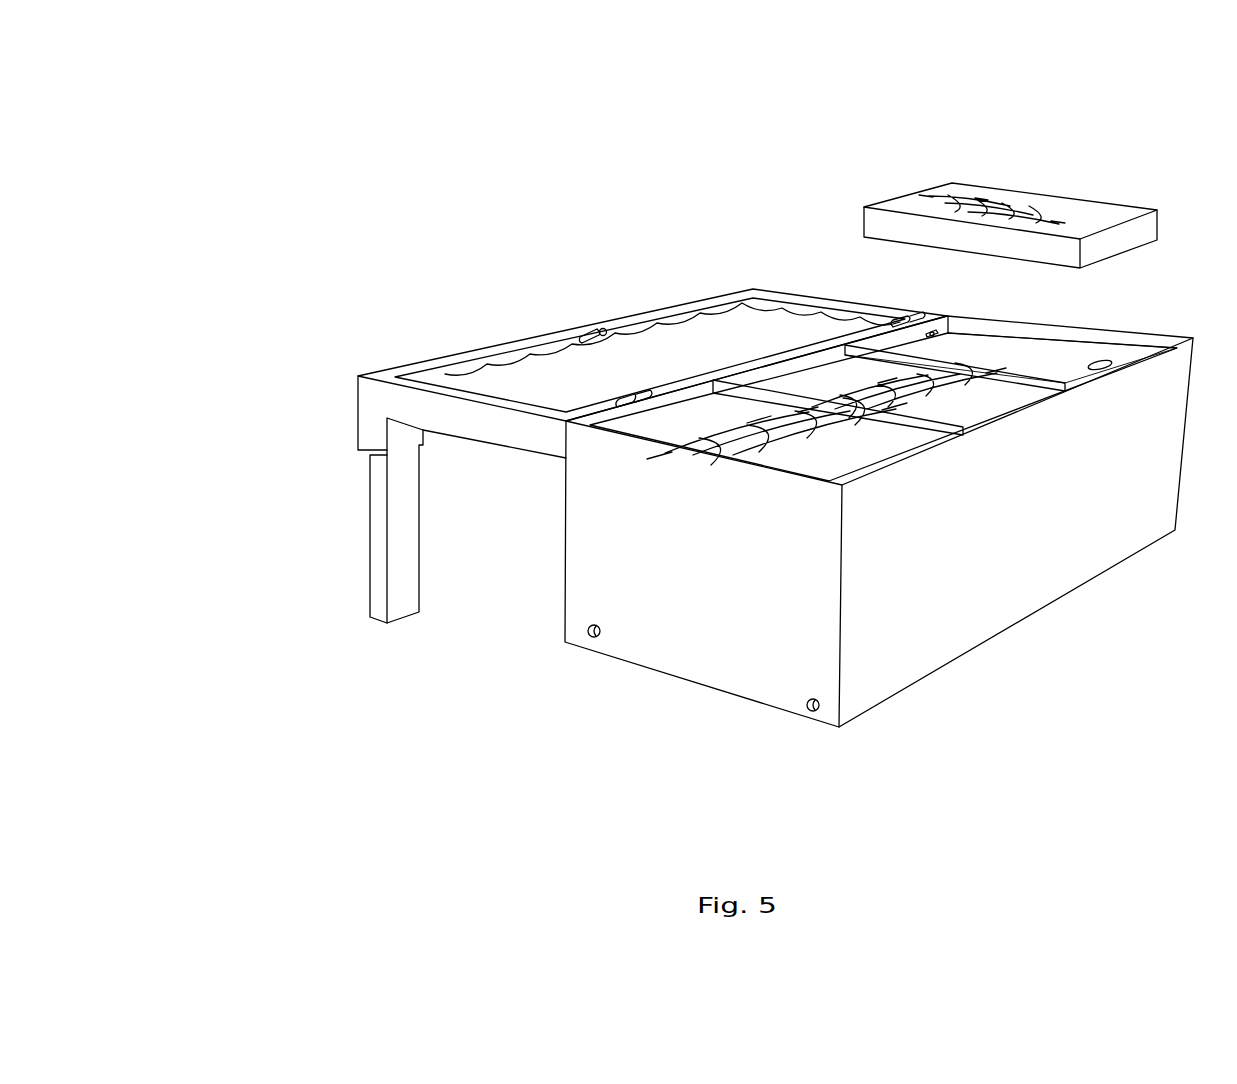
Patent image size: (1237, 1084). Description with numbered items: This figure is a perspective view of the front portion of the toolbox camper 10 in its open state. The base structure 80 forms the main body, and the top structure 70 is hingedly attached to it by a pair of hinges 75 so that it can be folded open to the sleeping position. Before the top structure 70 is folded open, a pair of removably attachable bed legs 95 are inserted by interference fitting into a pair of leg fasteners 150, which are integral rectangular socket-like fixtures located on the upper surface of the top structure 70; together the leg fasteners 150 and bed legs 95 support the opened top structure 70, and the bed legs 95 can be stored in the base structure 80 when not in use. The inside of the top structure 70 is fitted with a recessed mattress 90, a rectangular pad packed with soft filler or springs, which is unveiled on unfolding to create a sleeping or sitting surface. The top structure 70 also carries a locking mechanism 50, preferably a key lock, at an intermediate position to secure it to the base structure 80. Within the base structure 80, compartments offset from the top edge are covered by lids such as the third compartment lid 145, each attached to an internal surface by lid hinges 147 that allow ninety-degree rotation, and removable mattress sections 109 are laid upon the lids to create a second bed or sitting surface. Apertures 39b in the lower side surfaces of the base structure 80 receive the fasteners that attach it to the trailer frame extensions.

The toolbox camper 10 is at (262, 195).
The top structure 70 is at (487, 358).
The mattress 90 is at (703, 340).
The locking mechanism 50 is at (585, 337).
The hinges 75 is at (622, 398).
The lid hinges 147 is at (933, 332).
The third compartment lid 145 is at (1068, 360).
The mattress sections 109 is at (1083, 207).
The base structure 80 is at (596, 547).
The leg fasteners 150 is at (378, 432).
The bed legs 95 is at (405, 612).
The apertures 39b is at (808, 712).